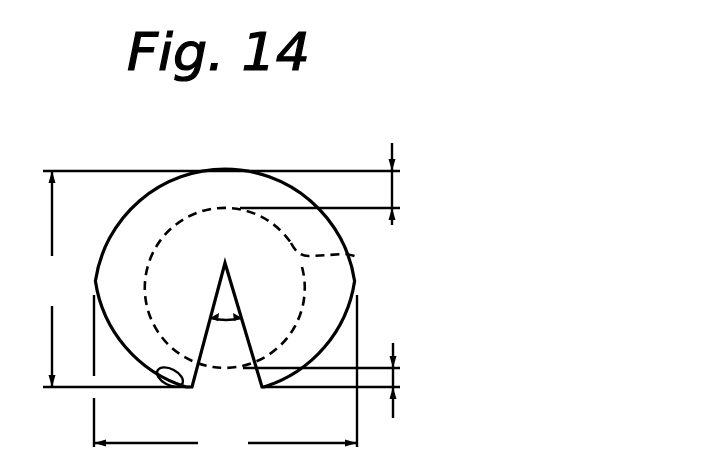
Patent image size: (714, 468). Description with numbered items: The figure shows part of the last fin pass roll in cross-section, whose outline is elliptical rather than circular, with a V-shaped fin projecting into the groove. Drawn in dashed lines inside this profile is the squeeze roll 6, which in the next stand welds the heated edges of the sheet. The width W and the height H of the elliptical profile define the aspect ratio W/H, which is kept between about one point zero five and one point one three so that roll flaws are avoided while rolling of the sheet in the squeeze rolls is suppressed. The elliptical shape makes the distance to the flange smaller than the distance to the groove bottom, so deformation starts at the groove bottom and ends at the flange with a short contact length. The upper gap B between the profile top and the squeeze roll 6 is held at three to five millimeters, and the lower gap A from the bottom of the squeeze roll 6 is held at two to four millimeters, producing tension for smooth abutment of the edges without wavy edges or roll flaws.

The squeeze roll 6 is at (357, 257).
The height of the fin pass roll profile H is at (52, 279).
The upper gap B is at (390, 172).
The lower gap A is at (393, 368).
The width of the fin pass roll profile W is at (225, 444).